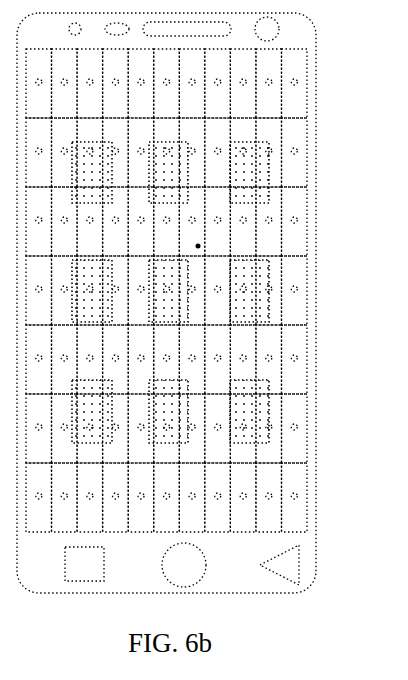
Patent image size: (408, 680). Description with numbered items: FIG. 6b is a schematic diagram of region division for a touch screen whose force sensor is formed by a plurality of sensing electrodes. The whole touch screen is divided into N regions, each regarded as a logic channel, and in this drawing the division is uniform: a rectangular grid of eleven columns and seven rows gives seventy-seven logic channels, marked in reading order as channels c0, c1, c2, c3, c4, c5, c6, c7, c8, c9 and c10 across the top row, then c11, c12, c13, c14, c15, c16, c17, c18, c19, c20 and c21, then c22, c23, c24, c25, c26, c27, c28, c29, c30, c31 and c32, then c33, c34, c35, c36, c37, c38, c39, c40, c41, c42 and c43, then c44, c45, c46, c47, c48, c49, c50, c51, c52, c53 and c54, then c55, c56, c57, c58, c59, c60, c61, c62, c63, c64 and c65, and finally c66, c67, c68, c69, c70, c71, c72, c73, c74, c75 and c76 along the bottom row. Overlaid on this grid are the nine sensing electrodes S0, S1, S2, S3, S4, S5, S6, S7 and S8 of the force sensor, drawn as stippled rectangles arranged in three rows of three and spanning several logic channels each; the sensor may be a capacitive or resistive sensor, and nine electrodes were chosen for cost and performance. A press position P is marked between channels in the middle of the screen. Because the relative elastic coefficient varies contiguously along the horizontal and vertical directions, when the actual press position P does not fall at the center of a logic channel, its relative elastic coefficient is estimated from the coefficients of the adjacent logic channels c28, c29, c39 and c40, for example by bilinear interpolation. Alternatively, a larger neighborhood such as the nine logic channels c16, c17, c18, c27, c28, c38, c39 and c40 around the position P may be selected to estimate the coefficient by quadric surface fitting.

The logic channel region c0 is at (39, 83).
The logic channel region c1 is at (65, 83).
The logic channel region c2 is at (90, 83).
The logic channel region c3 is at (116, 83).
The logic channel region c4 is at (141, 83).
The logic channel region c5 is at (167, 83).
The logic channel region c6 is at (192, 83).
The logic channel region c7 is at (218, 83).
The logic channel region c8 is at (243, 83).
The logic channel region c9 is at (269, 83).
The logic channel region c10 is at (295, 83).
The logic channel region c11 is at (39, 152).
The logic channel region c12 is at (65, 152).
The logic channel region c13 is at (90, 152).
The logic channel region c14 is at (116, 152).
The logic channel region c15 is at (141, 152).
The logic channel region c16 is at (167, 152).
The logic channel region c17 is at (192, 152).
The logic channel region c18 is at (218, 152).
The logic channel region c19 is at (243, 152).
The logic channel region c20 is at (269, 152).
The logic channel region c21 is at (295, 152).
The logic channel region c22 is at (39, 221).
The logic channel region c23 is at (65, 221).
The logic channel region c24 is at (90, 221).
The logic channel region c25 is at (116, 221).
The logic channel region c26 is at (141, 221).
The logic channel region c27 is at (167, 221).
The logic channel region c28 is at (192, 221).
The logic channel region c29 is at (218, 221).
The logic channel region c30 is at (243, 221).
The logic channel region c31 is at (269, 221).
The logic channel region c32 is at (295, 221).
The logic channel region c33 is at (39, 290).
The logic channel region c34 is at (65, 290).
The logic channel region c35 is at (90, 290).
The logic channel region c36 is at (116, 290).
The logic channel region c37 is at (141, 290).
The logic channel region c38 is at (167, 290).
The logic channel region c39 is at (192, 290).
The logic channel region c40 is at (218, 290).
The logic channel region c41 is at (243, 290).
The logic channel region c42 is at (269, 290).
The logic channel region c43 is at (295, 290).
The logic channel region c44 is at (39, 359).
The logic channel region c45 is at (65, 359).
The logic channel region c46 is at (90, 359).
The logic channel region c47 is at (116, 359).
The logic channel region c48 is at (141, 359).
The logic channel region c49 is at (167, 359).
The logic channel region c50 is at (192, 359).
The logic channel region c51 is at (218, 359).
The logic channel region c52 is at (243, 359).
The logic channel region c53 is at (269, 359).
The logic channel region c54 is at (295, 359).
The logic channel region c55 is at (39, 428).
The logic channel region c56 is at (65, 428).
The logic channel region c57 is at (90, 428).
The logic channel region c58 is at (116, 428).
The logic channel region c59 is at (141, 428).
The logic channel region c60 is at (167, 428).
The logic channel region c61 is at (192, 428).
The logic channel region c62 is at (218, 428).
The logic channel region c63 is at (243, 428).
The logic channel region c64 is at (269, 428).
The logic channel region c65 is at (295, 428).
The logic channel region c66 is at (39, 497).
The logic channel region c67 is at (65, 497).
The logic channel region c68 is at (90, 497).
The logic channel region c69 is at (116, 497).
The logic channel region c70 is at (141, 497).
The logic channel region c71 is at (167, 497).
The logic channel region c72 is at (192, 497).
The logic channel region c73 is at (218, 497).
The logic channel region c74 is at (243, 497).
The logic channel region c75 is at (269, 497).
The logic channel region c76 is at (295, 497).
The sensing electrode S0 is at (92, 172).
The sensing electrode S1 is at (168, 172).
The sensing electrode S2 is at (249, 172).
The sensing electrode S3 is at (92, 291).
The sensing electrode S4 is at (168, 291).
The sensing electrode S5 is at (249, 291).
The sensing electrode S6 is at (92, 411).
The sensing electrode S7 is at (168, 411).
The sensing electrode S8 is at (249, 411).
The press position P is at (192, 250).